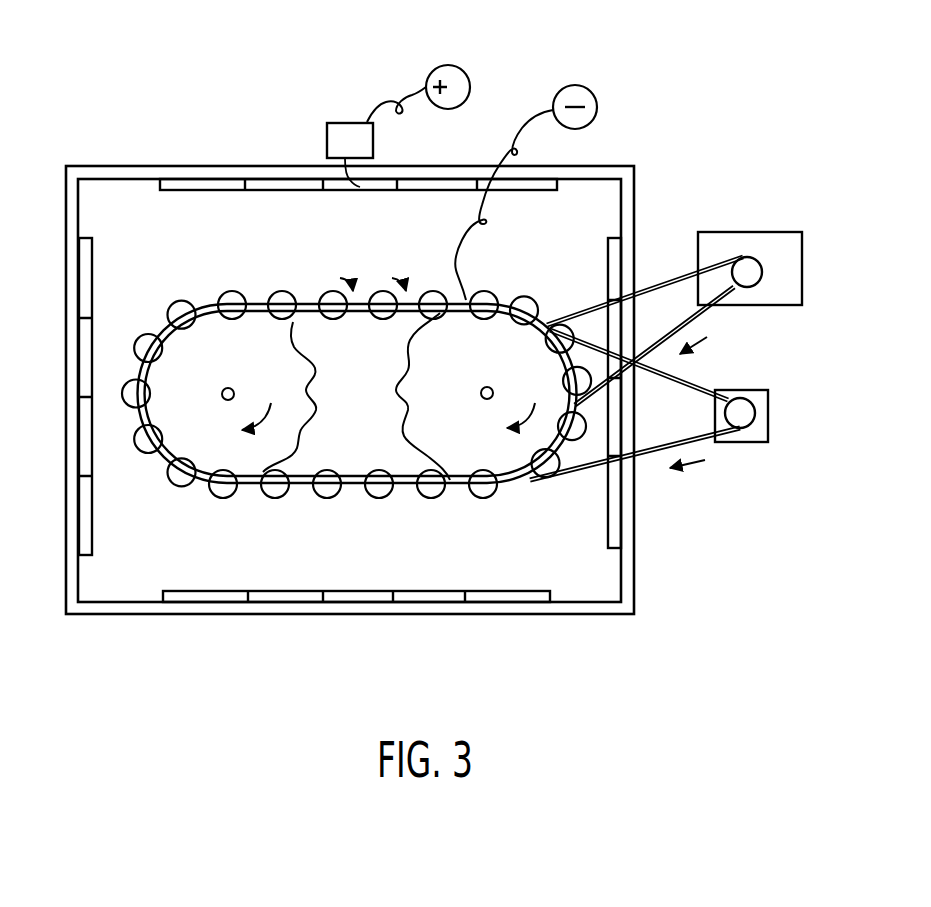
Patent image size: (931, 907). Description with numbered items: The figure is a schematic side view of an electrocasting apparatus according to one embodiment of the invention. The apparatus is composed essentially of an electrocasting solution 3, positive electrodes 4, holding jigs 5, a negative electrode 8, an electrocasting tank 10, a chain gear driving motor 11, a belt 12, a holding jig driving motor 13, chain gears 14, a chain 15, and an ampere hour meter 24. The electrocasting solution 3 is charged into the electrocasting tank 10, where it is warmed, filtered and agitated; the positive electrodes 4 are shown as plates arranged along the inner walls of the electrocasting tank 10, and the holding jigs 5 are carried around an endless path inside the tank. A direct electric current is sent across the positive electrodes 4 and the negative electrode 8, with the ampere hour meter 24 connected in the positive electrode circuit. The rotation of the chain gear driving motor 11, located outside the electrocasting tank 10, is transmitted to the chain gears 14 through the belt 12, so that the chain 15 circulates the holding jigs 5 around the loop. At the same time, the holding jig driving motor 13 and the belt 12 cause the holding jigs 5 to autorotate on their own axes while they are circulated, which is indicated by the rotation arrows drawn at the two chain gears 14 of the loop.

The electrocasting solution 3 is at (602, 201).
The positive electrodes 4 is at (383, 102).
The holding jigs 5 is at (223, 297).
The negative electrode 8 is at (527, 117).
The electrocasting tank 10 is at (610, 170).
The chain gear driving motor 11 is at (757, 232).
The belt 12 is at (670, 278).
The holding jig driving motor 13 is at (760, 390).
The chain gears 14 is at (472, 452).
The chain 15 is at (300, 490).
The ampere hour meter 24 is at (327, 143).